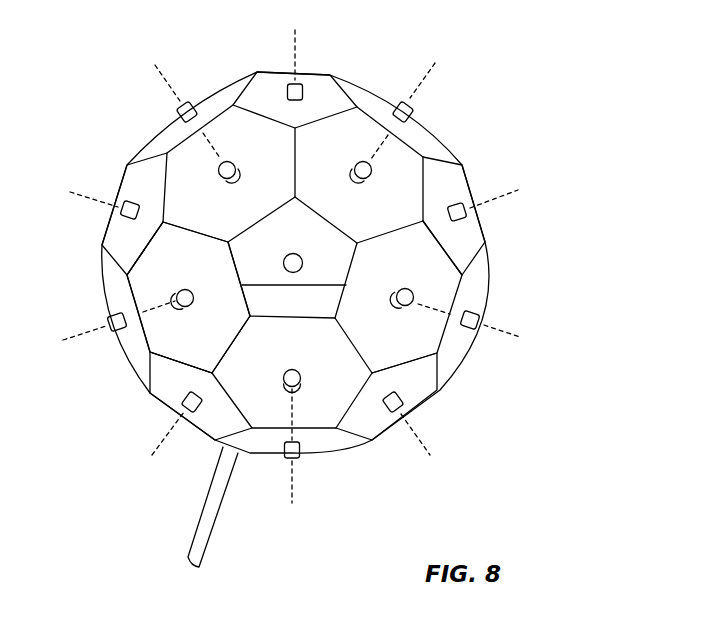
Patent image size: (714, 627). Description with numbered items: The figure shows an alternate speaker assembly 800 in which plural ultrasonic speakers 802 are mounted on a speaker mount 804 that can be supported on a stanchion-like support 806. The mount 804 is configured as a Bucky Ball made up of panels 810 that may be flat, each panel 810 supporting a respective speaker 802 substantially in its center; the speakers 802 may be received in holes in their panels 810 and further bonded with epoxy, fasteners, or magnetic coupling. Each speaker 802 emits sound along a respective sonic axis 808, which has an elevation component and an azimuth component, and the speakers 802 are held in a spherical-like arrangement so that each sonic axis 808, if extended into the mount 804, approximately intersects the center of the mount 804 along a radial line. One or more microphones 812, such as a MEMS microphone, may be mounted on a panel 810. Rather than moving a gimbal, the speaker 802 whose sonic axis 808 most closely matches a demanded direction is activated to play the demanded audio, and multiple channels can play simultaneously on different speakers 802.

The speaker assembly 800 is at (512, 86).
The ultrasonic speaker 802 is at (304, 86).
The speaker mount 804 is at (488, 242).
The stanchion-like support 806 is at (222, 515).
The sonic axis 808 is at (298, 43).
The panel 810 is at (145, 283).
The microphone 812 is at (191, 355).